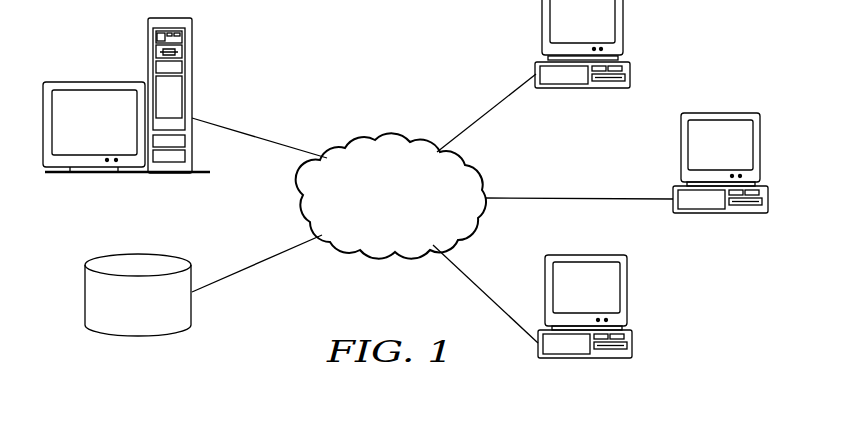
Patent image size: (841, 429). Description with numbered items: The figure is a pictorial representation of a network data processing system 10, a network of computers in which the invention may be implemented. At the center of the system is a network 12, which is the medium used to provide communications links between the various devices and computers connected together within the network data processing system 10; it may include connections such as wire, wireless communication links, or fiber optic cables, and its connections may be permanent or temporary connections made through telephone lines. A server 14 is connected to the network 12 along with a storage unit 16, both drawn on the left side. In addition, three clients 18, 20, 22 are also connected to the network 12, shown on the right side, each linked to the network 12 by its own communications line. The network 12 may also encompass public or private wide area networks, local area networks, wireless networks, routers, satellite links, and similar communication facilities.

The network data processing system 10 is at (306, 46).
The network 12 is at (381, 225).
The server 14 is at (150, 42).
The storage unit 16 is at (85, 292).
The client 18 is at (623, 30).
The client 20 is at (762, 148).
The client 22 is at (628, 300).